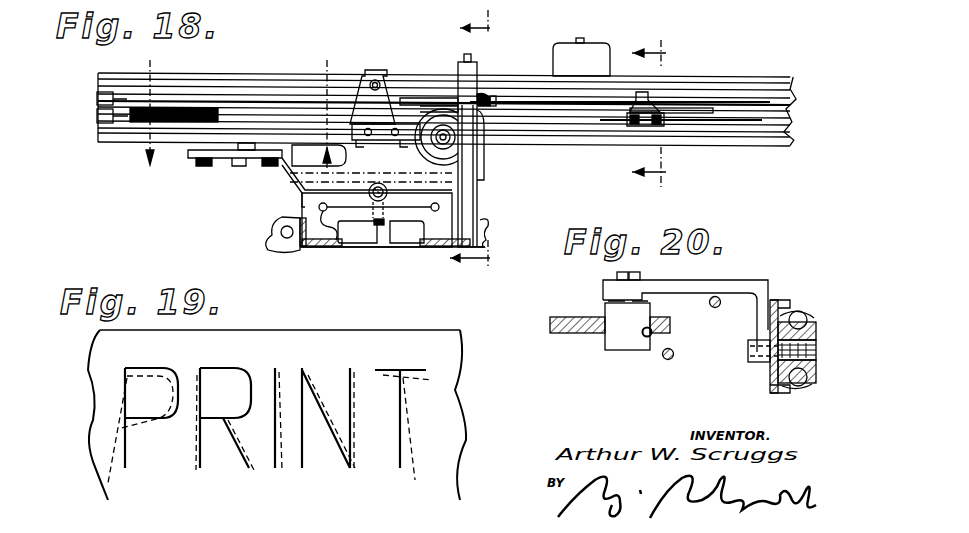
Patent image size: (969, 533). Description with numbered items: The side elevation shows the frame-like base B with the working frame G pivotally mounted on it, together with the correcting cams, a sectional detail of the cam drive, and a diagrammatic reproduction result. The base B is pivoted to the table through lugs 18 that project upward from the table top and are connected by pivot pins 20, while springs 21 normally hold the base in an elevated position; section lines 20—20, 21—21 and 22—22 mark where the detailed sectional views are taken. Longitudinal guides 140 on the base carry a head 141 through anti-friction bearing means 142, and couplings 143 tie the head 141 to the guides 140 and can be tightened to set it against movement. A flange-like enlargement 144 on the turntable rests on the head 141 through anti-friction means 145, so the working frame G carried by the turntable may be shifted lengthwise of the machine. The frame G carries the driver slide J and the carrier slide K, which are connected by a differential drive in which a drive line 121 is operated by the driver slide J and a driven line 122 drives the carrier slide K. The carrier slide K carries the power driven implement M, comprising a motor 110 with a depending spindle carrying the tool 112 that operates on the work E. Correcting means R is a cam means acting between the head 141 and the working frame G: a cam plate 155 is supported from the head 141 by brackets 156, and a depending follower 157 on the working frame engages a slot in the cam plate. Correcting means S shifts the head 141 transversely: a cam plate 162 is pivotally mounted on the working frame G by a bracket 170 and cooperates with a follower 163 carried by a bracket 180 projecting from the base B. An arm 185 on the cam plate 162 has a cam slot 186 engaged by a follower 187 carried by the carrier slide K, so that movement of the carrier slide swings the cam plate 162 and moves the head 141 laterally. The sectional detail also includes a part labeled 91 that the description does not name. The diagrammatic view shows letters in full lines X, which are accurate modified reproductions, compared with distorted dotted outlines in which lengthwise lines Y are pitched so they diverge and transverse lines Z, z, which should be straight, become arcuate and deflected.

In FIG. 18, the working frame G is at (112, 140).
In FIG. 20, the working frame G is at (770, 390).
In FIG. 18, the section line 22 is at (238, 105).
In FIG. 18, the springs 21 is at (484, 144).
In FIG. 18, the pivot pins 20 is at (262, 230).
In FIG. 18, the power driven implement M is at (593, 44).
In FIG. 18, the motor 110 is at (581, 57).
In FIG. 18, the cam plate 162 is at (550, 116).
In FIG. 20, the cam plate 162 is at (585, 328).
In FIG. 18, the correcting means S is at (690, 105).
In FIG. 18, the cutter or tool 112 is at (582, 146).
In FIG. 18, the bracket 170 is at (402, 126).
In FIG. 18, the follower 163 is at (462, 100).
In FIG. 18, the bracket 180 is at (472, 163).
In FIG. 18, the frame-like base B is at (480, 224).
In FIG. 18, the flange-like enlargement 144 is at (305, 175).
In FIG. 18, the correcting means R is at (190, 157).
In FIG. 18, the cam plate 155 is at (212, 166).
In FIG. 18, the depending follower 157 is at (228, 168).
In FIG. 18, the brackets 156 is at (280, 170).
In FIG. 18, the anti-friction means 145 is at (292, 186).
In FIG. 18, the longitudinal guides 140 is at (316, 220).
In FIG. 18, the anti-friction bearing means 142 is at (361, 231).
In FIG. 18, the head 141 is at (407, 232).
In FIG. 18, the coupling or tie 143 is at (405, 200).
In FIG. 18, the lugs 18 is at (265, 243).
In FIG. 19, the work E is at (320, 330).
In FIG. 19, the lines Z is at (141, 374).
In FIG. 19, the letters in full lines X is at (248, 390).
In FIG. 19, the lines Y is at (196, 448).
In FIG. 19, the lines Z z is at (416, 391).
In FIG. 20, the arm 185 is at (585, 318).
In FIG. 20, the follower 187 is at (620, 346).
In FIG. 20, the cam slot 186 is at (655, 336).
In FIG. 20, the drive line 121 is at (714, 308).
In FIG. 20, the driven line 122 is at (668, 362).
In FIG. 20, the driver slide J is at (780, 302).
In FIG. 20, the bearing 91 is at (801, 313).
In FIG. 20, the carrier slide K is at (770, 362).